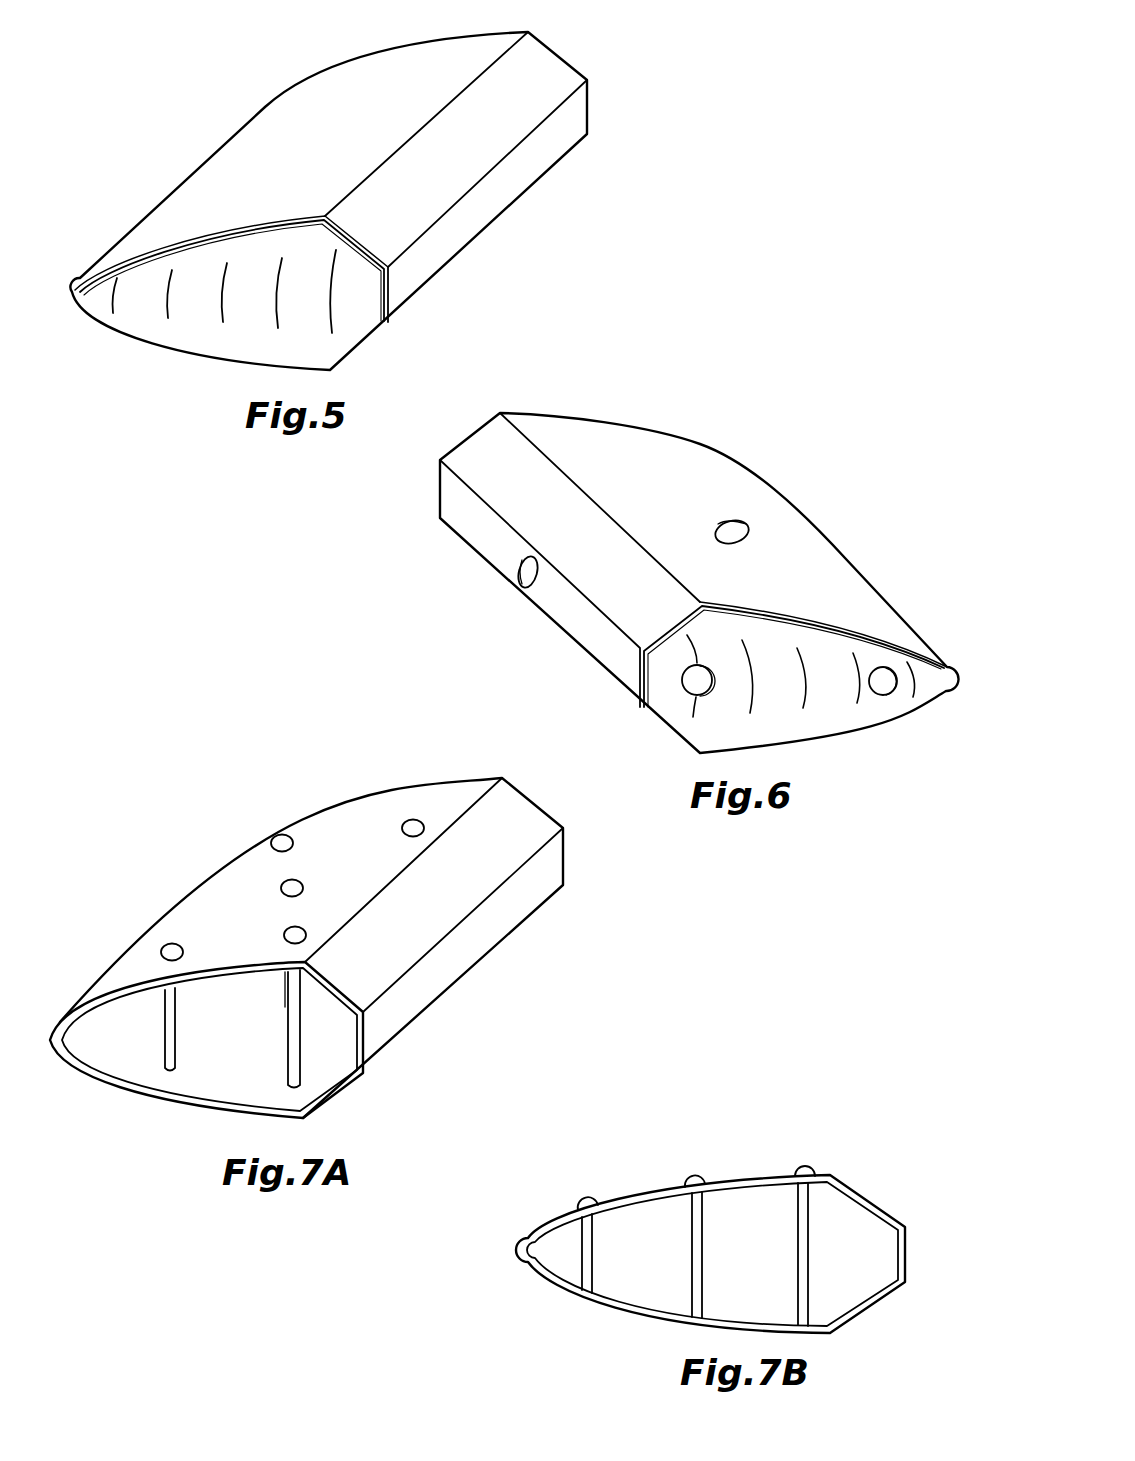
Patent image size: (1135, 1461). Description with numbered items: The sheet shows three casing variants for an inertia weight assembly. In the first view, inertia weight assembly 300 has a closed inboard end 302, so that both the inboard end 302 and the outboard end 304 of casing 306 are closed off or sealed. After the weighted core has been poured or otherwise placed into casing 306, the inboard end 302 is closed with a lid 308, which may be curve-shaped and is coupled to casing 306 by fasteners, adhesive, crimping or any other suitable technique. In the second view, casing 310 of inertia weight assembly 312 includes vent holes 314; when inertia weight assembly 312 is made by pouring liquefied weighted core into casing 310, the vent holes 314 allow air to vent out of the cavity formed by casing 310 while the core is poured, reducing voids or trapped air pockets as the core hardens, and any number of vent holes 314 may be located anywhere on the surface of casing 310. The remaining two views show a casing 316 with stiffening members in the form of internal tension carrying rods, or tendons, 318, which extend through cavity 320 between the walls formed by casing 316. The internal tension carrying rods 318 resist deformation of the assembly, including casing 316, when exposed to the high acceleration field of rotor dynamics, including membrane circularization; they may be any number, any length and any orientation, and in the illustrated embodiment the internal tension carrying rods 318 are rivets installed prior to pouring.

In FIG. 5, the inertia weight assembly 300 is at (200, 165).
In FIG. 5, the inboard end 302 is at (132, 323).
In FIG. 5, the outboard end 304 is at (372, 52).
In FIG. 5, the casing 306 is at (278, 120).
In FIG. 5, the lid 308 is at (210, 342).
In FIG. 6, the casing 310 is at (590, 438).
In FIG. 6, the inertia weight assembly 312 is at (718, 482).
In FIG. 6, the vent holes 314 is at (750, 532).
In FIG. 7A, the casing 316 is at (222, 883).
In FIG. 7B, the casing 316 is at (750, 1178).
In FIG. 7A, the internal tension carrying rods 318 is at (163, 1028).
In FIG. 7B, the internal tension carrying rods 318 is at (592, 1247).
In FIG. 7A, the cavity 320 is at (222, 1072).
In FIG. 7B, the cavity 320 is at (867, 1223).